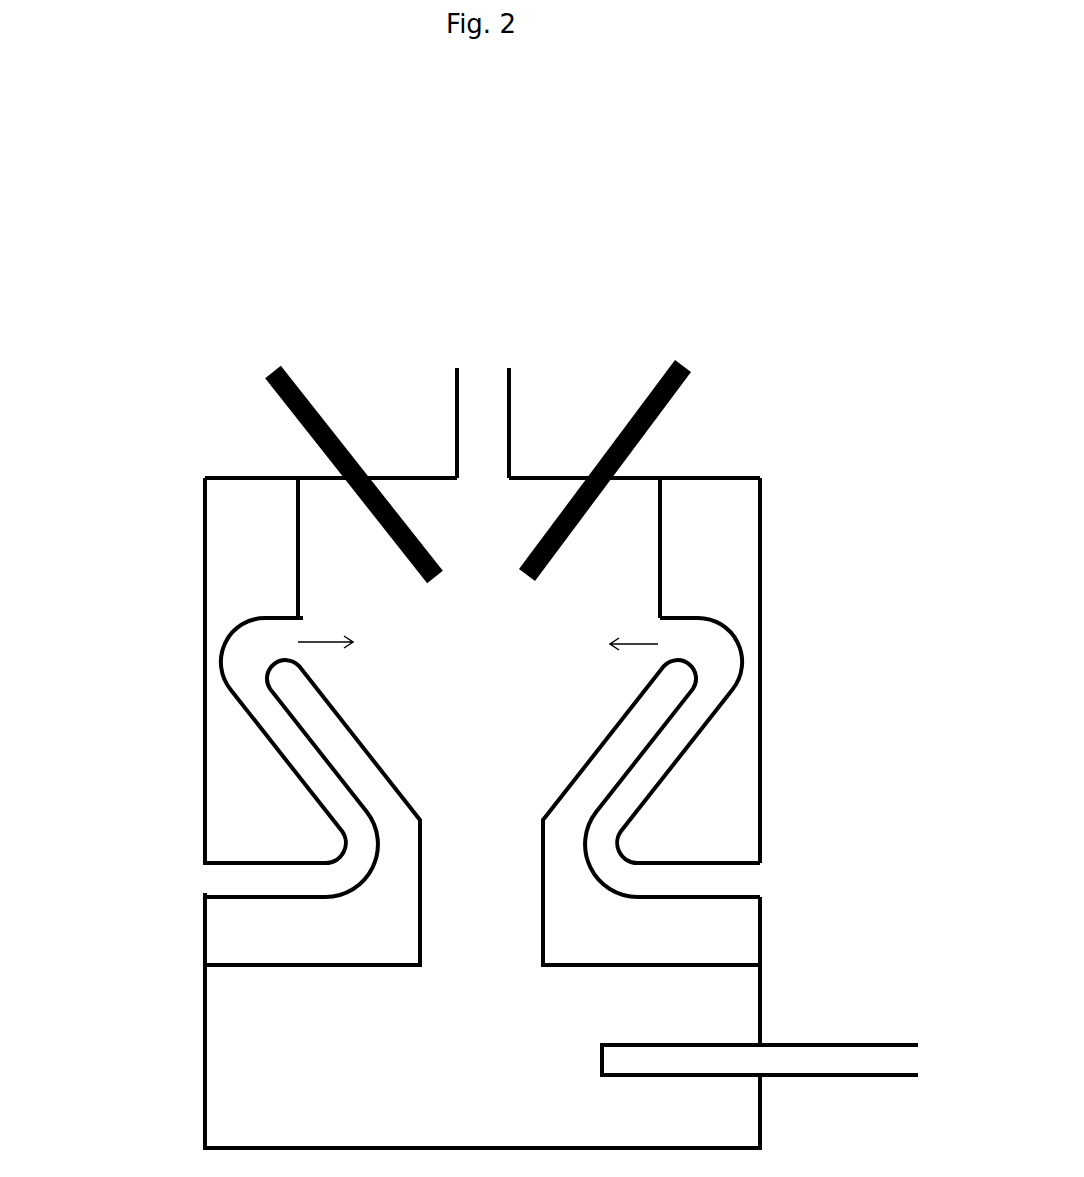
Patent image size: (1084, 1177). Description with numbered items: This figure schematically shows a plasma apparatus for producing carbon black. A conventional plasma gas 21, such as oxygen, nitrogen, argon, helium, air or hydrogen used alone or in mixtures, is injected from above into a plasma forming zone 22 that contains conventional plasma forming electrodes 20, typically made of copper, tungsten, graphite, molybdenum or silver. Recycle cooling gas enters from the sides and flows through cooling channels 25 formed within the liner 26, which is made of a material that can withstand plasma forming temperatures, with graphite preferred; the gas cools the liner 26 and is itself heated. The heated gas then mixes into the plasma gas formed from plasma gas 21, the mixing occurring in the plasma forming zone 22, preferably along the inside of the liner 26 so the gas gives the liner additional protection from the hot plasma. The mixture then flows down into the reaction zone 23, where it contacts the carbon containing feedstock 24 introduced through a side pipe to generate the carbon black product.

The plasma forming electrodes 20 is at (310, 341).
The plasma gas 21 is at (489, 396).
The plasma forming zone 22 is at (482, 577).
The reaction zone 23 is at (482, 1056).
The carbon containing feedstock 24 is at (899, 1066).
The cooling channels 25 is at (164, 880).
The liner 26 is at (481, 791).